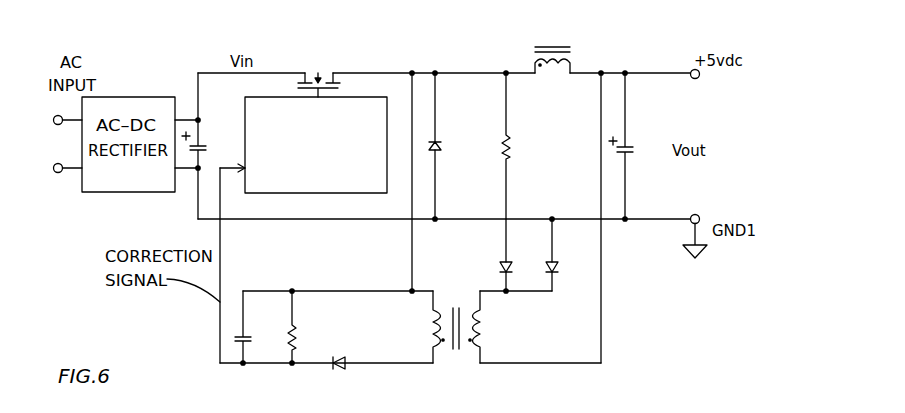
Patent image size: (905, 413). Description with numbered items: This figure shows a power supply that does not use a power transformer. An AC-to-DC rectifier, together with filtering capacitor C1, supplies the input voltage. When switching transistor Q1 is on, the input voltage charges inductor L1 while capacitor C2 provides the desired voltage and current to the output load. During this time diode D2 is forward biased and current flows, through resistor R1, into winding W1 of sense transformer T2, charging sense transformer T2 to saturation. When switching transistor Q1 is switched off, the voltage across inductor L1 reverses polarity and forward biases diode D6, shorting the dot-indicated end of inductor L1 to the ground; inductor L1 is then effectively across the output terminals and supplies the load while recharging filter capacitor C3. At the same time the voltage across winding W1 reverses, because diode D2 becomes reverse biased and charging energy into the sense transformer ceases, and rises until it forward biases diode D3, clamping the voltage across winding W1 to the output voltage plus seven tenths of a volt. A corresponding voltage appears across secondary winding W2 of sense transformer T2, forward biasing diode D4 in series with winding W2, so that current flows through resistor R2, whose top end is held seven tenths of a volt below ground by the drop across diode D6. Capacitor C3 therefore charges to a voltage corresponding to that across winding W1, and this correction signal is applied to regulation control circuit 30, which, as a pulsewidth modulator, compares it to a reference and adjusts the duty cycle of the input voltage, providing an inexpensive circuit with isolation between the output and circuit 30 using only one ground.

The regulation control circuit 30 is at (345, 197).
The switching transistor Q1 is at (332, 85).
The filtering capacitor C1 is at (203, 146).
The capacitor C2 is at (629, 146).
The filter capacitor C3 is at (252, 327).
The diode D2 is at (516, 255).
The diode D3 is at (562, 255).
The diode D4 is at (351, 355).
The diode D6 is at (445, 146).
The resistor R1 is at (518, 146).
The resistor R2 is at (302, 327).
The inductor L1 is at (568, 60).
The sense transformer T2 is at (458, 324).
The winding W1 is at (488, 327).
The secondary winding W2 is at (427, 327).